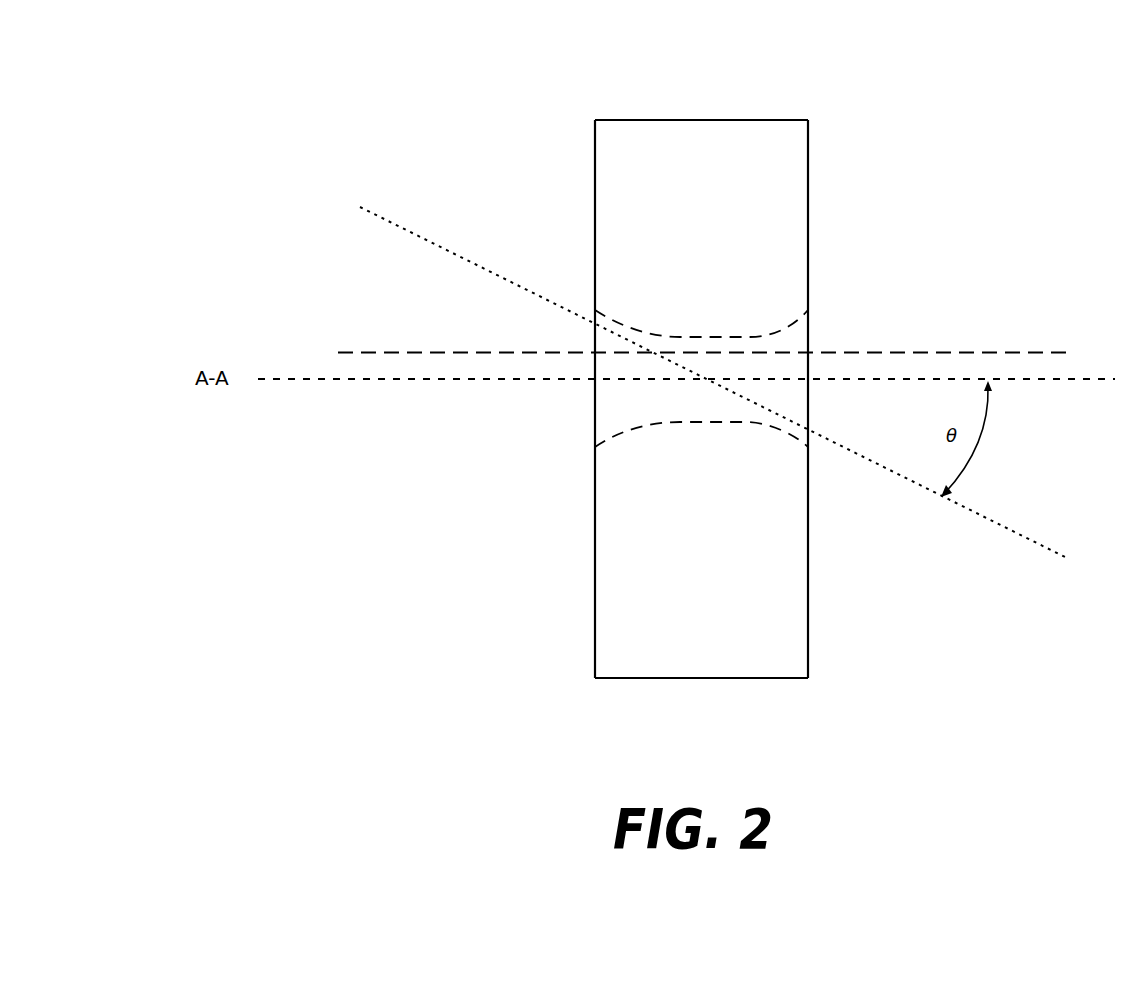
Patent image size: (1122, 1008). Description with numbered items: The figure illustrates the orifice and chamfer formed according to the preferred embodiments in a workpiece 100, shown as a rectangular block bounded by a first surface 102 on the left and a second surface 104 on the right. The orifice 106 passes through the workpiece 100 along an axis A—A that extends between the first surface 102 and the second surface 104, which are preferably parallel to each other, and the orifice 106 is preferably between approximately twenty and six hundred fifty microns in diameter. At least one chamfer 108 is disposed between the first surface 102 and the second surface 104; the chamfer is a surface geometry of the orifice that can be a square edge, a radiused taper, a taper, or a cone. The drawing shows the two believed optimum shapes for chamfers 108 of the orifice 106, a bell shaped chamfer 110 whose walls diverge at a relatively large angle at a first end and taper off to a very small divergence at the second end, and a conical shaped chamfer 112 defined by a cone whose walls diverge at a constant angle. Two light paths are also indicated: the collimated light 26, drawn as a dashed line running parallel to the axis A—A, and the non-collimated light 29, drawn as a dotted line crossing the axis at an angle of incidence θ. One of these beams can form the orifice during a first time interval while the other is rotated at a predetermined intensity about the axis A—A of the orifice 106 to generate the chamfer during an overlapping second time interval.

The workpiece 100 is at (738, 152).
The first surface 102 is at (594, 182).
The second surface 104 is at (808, 200).
The orifice 106 is at (675, 413).
The chamfer 108 is at (613, 403).
The bell shaped chamfer 110 is at (752, 336).
The conical shaped chamfer 112 is at (763, 422).
The collimated light 26 is at (883, 352).
The non-collimated light 29 is at (977, 513).